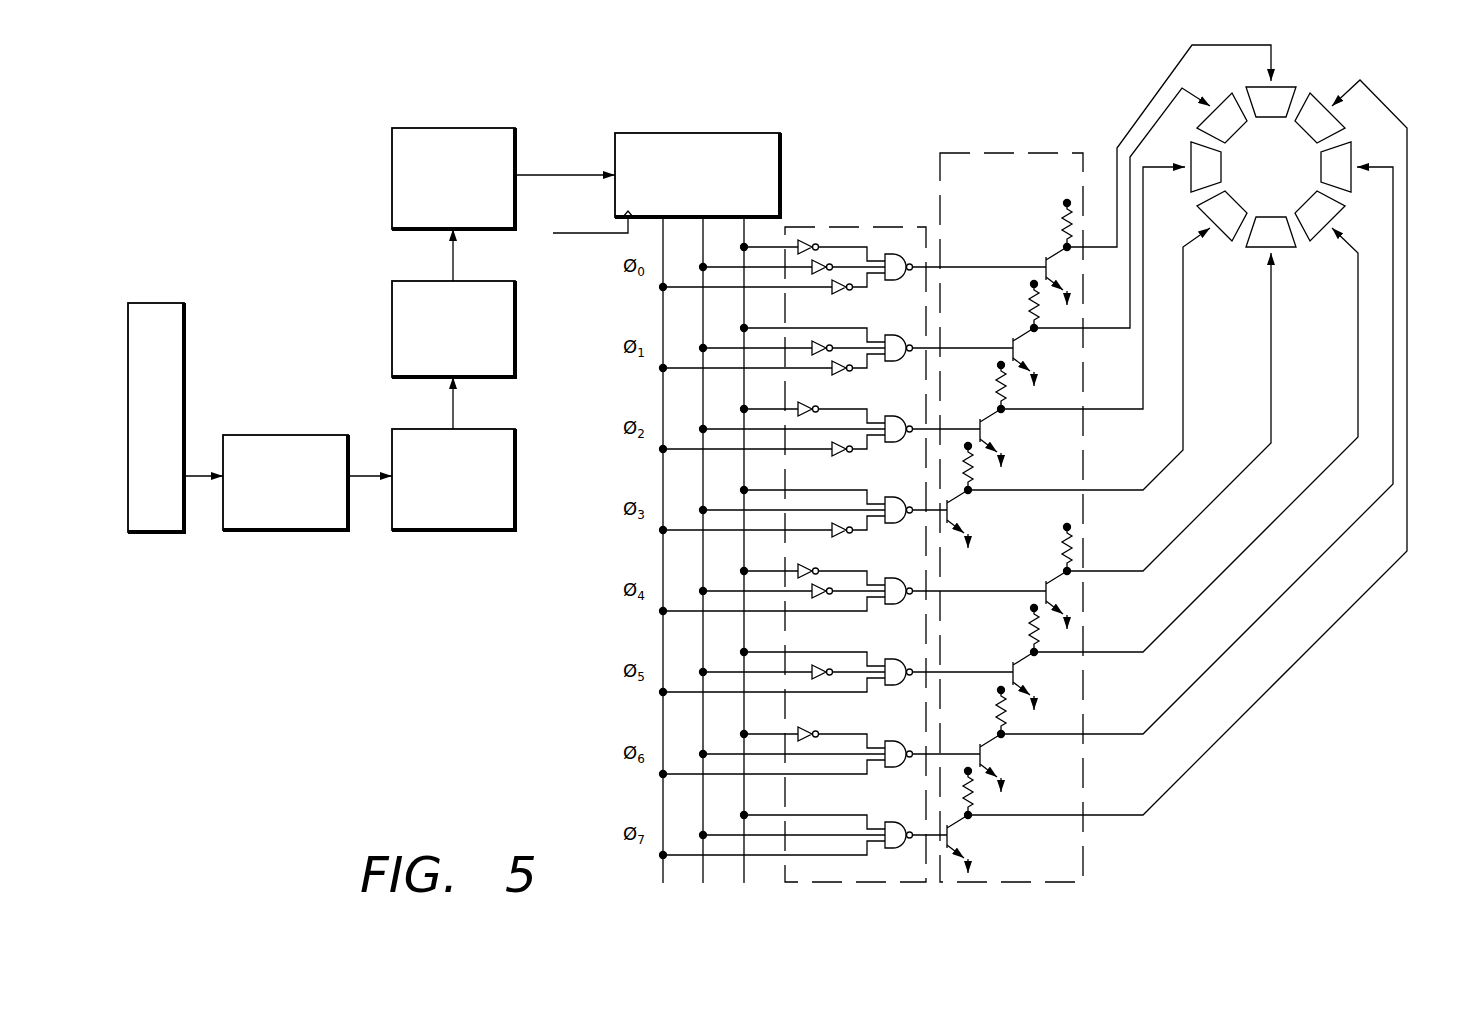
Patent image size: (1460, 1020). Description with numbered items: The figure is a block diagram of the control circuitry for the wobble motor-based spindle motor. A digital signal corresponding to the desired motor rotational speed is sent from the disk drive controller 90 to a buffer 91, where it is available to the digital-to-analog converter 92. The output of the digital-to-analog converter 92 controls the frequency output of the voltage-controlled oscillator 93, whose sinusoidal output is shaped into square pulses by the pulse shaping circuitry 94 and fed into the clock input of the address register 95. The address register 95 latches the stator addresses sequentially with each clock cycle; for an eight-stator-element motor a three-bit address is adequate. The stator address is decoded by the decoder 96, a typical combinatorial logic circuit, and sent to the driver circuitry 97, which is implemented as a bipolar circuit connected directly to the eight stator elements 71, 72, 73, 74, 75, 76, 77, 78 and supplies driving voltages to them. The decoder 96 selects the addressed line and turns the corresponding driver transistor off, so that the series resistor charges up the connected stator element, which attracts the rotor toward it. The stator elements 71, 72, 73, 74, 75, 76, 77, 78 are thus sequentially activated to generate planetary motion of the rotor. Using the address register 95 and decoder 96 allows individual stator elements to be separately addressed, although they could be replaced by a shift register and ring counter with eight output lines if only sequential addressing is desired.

The stator element 71 is at (1282, 82).
The stator element 72 is at (1326, 104).
The stator element 73 is at (1358, 155).
The stator element 74 is at (1340, 222).
The stator element 75 is at (1287, 253).
The stator element 76 is at (1222, 237).
The stator element 77 is at (1183, 155).
The stator element 78 is at (1223, 103).
The disk drive controller 90 is at (165, 338).
The buffer 91 is at (298, 435).
The digital-to-analog converter 92 is at (455, 530).
The voltage-controlled oscillator 93 is at (392, 312).
The pulse shaping circuitry 94 is at (392, 172).
The address register 95 is at (695, 133).
The decoder 96 is at (855, 227).
The driver circuitry 97 is at (1015, 152).